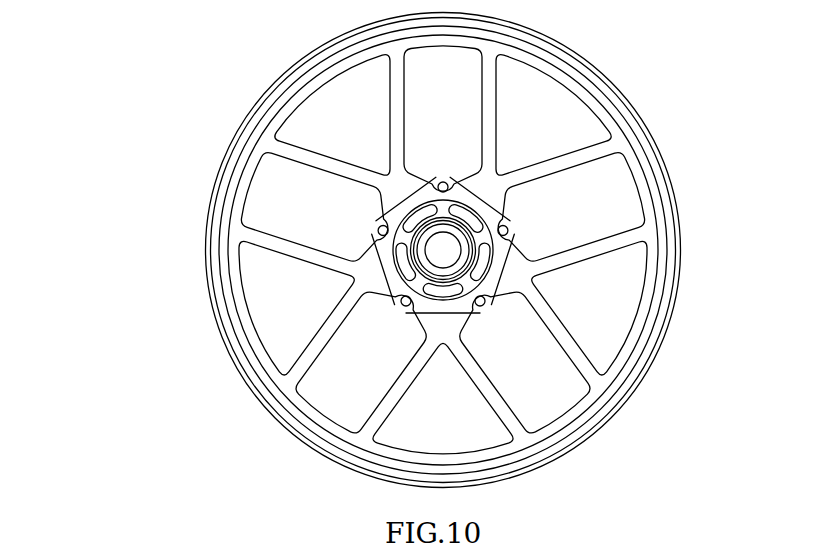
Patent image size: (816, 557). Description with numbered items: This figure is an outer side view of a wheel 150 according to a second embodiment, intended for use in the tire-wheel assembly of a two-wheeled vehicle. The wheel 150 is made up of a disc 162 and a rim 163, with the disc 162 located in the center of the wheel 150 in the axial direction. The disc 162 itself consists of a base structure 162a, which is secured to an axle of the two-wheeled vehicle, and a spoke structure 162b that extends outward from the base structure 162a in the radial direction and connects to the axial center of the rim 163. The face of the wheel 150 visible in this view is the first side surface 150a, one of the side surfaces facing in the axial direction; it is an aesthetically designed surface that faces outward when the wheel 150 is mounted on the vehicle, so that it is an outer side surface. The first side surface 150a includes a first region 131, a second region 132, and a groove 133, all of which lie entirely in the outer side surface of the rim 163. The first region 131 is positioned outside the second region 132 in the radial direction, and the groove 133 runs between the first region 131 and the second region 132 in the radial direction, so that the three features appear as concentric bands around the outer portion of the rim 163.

The wheel 150 is at (222, 98).
The first side surface 150a is at (290, 78).
The first region 131 is at (684, 205).
The second region 132 is at (670, 268).
The groove 133 is at (672, 248).
The disc 162 is at (97, 170).
The base structure 162a is at (373, 223).
The spoke structure 162b is at (303, 256).
The rim 163 is at (221, 334).